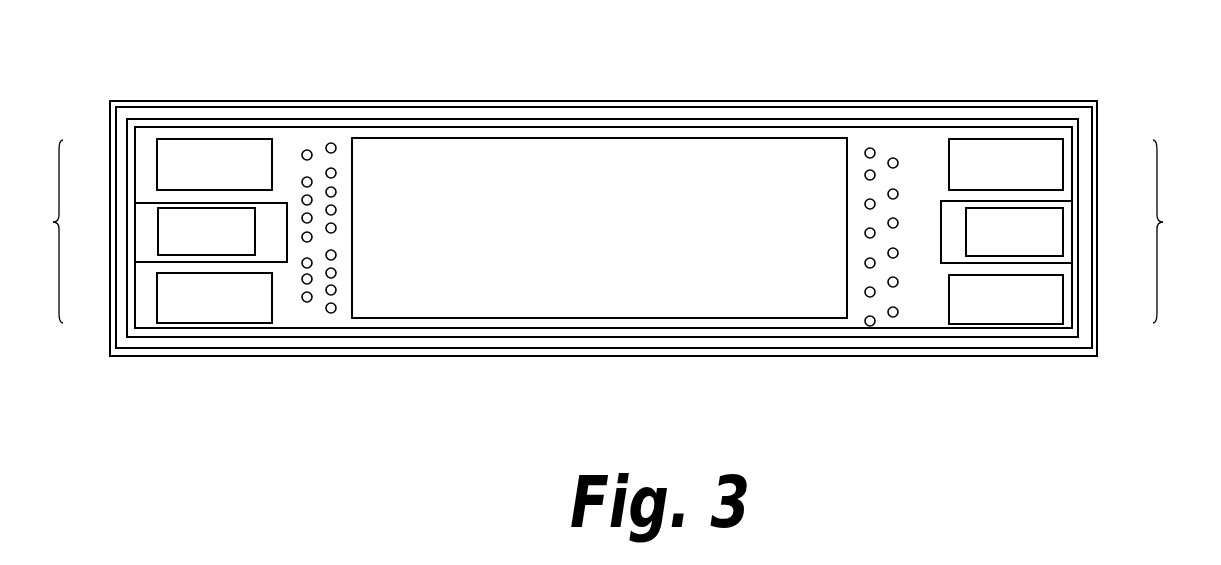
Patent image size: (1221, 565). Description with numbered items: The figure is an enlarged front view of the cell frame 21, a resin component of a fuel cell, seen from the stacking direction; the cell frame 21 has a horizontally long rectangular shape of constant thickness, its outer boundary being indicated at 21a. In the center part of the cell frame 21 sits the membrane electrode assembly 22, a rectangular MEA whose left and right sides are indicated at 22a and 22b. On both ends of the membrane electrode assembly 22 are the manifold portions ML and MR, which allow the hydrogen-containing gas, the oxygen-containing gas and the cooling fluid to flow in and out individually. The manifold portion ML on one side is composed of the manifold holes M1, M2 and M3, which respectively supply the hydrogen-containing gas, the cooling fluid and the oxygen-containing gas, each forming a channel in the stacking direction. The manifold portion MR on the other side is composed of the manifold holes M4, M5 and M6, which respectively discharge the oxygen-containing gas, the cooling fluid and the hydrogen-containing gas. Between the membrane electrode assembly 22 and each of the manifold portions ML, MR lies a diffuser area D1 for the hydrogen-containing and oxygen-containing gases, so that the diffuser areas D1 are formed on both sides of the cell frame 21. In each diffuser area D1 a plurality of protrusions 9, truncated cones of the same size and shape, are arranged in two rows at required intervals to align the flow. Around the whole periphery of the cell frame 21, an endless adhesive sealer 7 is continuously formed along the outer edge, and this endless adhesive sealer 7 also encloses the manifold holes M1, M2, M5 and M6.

The cell frame 21 is at (106, 98).
The outer periphery of display device 21a is at (427, 100).
The endless adhesive sealer 7 is at (170, 118).
The membrane electrode assembly 22 is at (602, 150).
The left edge of display screen 22a is at (352, 177).
The right edge of display screen 22b is at (848, 150).
The protrusions 9 is at (303, 150).
The diffuser area D1 is at (348, 152).
The manifold hole M1 is at (157, 158).
The manifold hole M2 is at (158, 226).
The manifold hole M3 is at (157, 298).
The manifold hole M4 is at (1063, 159).
The manifold hole M5 is at (1063, 226).
The manifold hole M6 is at (1063, 298).
The manifold portion ML is at (45, 231).
The manifold portion MR is at (1178, 231).